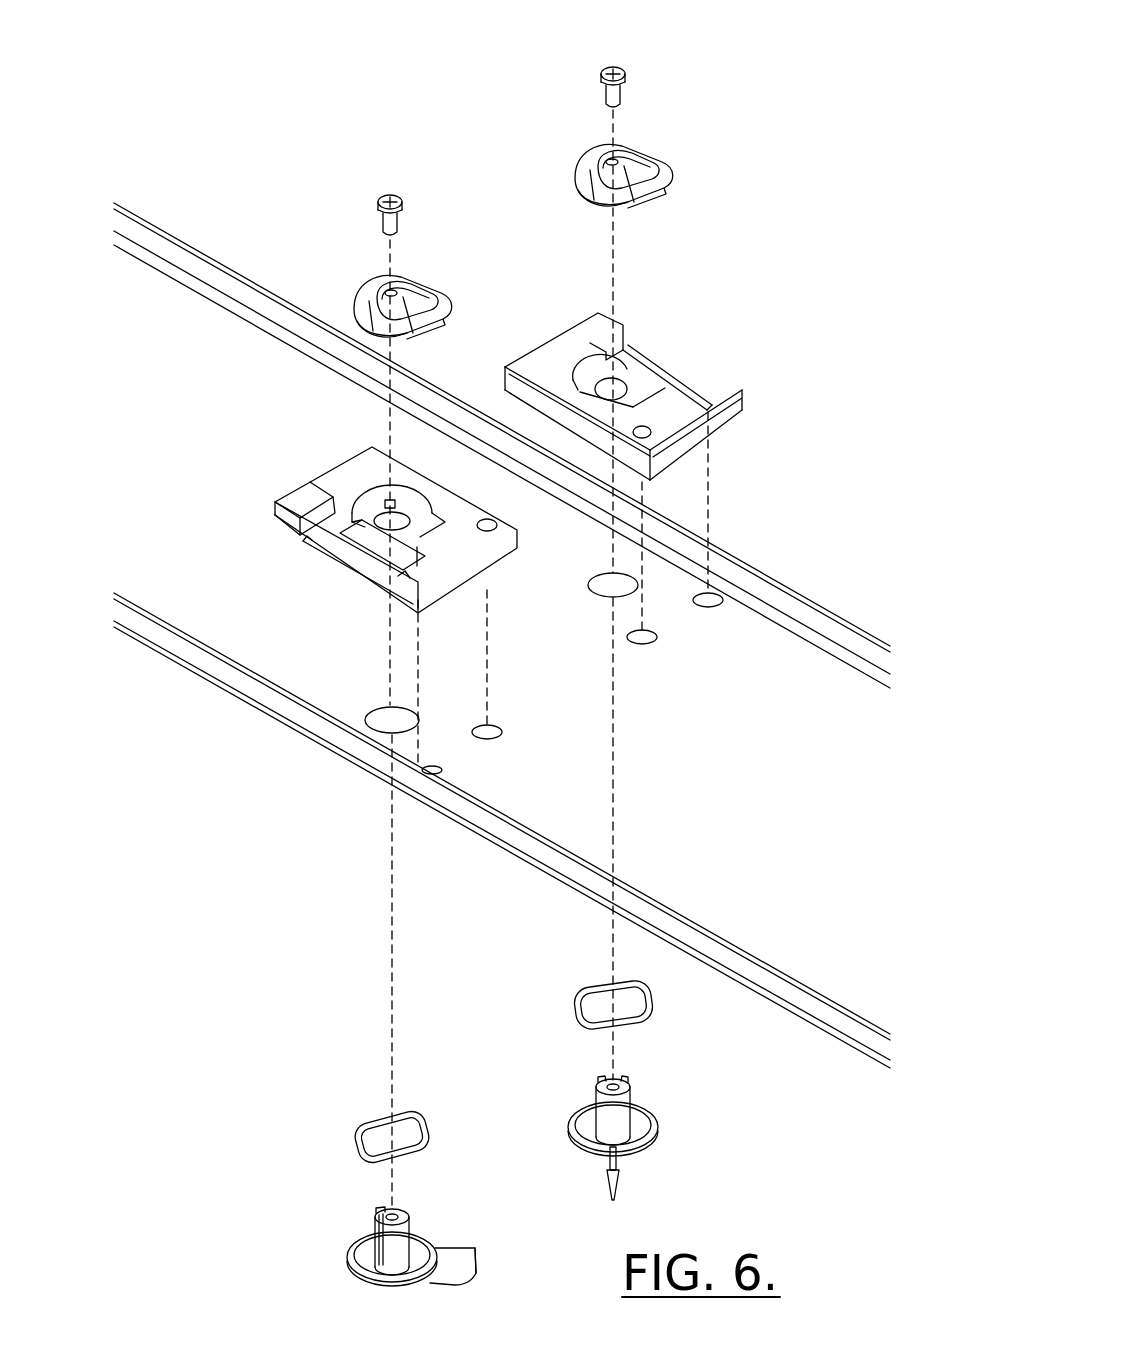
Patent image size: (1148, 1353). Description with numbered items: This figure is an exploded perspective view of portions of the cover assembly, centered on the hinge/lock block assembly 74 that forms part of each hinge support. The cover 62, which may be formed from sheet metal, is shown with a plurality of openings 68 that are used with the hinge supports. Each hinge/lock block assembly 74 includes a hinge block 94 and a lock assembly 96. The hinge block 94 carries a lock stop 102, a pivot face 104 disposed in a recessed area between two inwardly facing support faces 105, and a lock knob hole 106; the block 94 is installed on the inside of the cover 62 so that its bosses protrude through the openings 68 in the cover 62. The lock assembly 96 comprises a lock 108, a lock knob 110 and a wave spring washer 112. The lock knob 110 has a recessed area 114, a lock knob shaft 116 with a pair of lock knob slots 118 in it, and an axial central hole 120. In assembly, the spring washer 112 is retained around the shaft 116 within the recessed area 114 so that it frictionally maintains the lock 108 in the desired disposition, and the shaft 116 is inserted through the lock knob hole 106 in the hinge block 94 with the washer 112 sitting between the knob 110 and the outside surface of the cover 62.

The cover 62 is at (699, 765).
The openings 68 is at (650, 625).
The hinge/lock block assembly 74 is at (784, 206).
The hinge block 94 is at (288, 525).
The lock assembly 96 is at (388, 180).
The lock stop 102 is at (380, 503).
The pivot face 104 is at (372, 558).
The support faces 105 is at (307, 543).
The lock knob hole 106 is at (397, 518).
The lock 108 is at (353, 308).
The lock knob 110 is at (637, 1137).
The wave spring washer 112 is at (652, 1023).
The recessed area 114 is at (585, 1127).
The lock knob shaft 116 is at (615, 1120).
The lock knob slots 118 is at (602, 1078).
The axial central hole 120 is at (605, 1082).